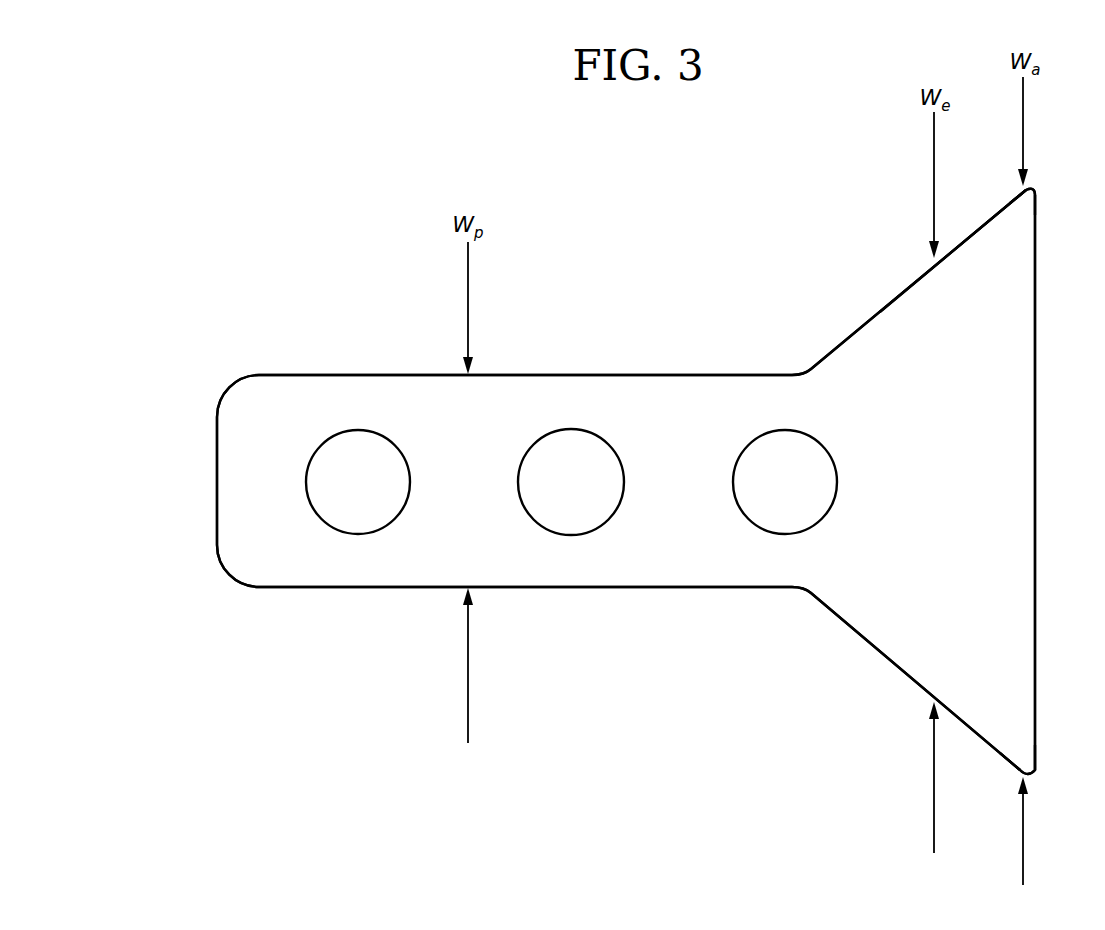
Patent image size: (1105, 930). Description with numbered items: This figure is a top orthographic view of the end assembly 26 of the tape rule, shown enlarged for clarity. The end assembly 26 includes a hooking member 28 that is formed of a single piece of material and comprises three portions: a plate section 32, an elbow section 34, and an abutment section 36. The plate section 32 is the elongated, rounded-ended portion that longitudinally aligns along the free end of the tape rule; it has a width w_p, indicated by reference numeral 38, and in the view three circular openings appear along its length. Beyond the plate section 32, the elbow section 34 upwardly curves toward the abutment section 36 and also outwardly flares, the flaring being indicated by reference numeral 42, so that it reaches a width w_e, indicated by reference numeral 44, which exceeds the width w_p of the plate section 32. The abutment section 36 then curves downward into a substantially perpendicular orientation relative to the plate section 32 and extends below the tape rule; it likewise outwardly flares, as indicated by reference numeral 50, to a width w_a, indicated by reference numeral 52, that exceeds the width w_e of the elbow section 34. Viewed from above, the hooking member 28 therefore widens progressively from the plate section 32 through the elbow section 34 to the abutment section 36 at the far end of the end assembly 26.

The end assembly 26 is at (282, 264).
The hooking member 28 is at (257, 588).
The plate section 32 is at (537, 588).
The elbow section 34 is at (848, 627).
The abutment section 36 is at (1037, 261).
The width w_p of plate section 38 is at (469, 325).
The outward flare of elbow section 42 is at (845, 340).
The width w_e of elbow section 44 is at (932, 190).
The outward flare of abutment section 50 is at (997, 753).
The width w_a of abutment section 52 is at (1024, 119).